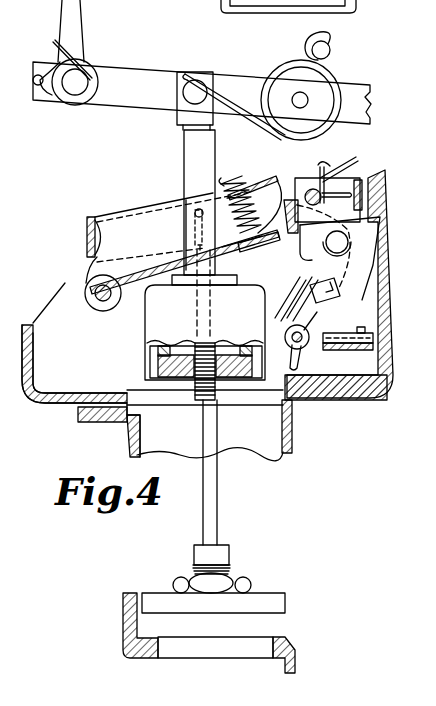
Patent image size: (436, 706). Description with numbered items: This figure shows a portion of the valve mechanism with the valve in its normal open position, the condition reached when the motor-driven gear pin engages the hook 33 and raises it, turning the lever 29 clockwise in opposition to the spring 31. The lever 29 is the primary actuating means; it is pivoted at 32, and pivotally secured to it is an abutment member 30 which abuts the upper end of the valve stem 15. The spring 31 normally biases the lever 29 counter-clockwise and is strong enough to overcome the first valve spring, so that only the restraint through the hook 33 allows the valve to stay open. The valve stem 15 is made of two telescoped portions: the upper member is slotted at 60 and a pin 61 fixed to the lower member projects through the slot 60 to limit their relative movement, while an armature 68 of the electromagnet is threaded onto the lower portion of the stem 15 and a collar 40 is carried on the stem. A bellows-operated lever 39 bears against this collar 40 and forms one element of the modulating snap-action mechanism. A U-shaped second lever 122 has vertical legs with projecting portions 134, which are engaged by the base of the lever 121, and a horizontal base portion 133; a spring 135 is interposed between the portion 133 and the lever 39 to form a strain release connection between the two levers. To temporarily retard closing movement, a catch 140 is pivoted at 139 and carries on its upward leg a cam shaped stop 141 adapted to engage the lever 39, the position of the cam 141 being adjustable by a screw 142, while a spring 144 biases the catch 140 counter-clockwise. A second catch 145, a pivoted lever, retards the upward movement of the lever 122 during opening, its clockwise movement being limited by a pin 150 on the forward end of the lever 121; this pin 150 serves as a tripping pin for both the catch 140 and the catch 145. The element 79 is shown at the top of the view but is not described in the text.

The valve stem 15 is at (240, 514).
The lever 29 is at (118, 67).
The abutment member 30 is at (177, 113).
The spring 31 is at (283, 65).
The pivot 32 is at (305, 93).
The hook 33 is at (62, 22).
The lever 39 is at (268, 244).
The collar 40 is at (228, 277).
The slot 60 is at (196, 240).
The pin 61 is at (195, 219).
The armature 68 is at (150, 378).
The bracket 79 is at (283, 14).
The lever 121 is at (88, 235).
The second lever 122 is at (152, 192).
The base portion 133 is at (258, 190).
The projecting portions 134 is at (104, 220).
The spring 135 is at (228, 180).
The pivot 139 is at (289, 332).
The catch 140 is at (322, 320).
The cam shaped stop 141 is at (288, 296).
The screw 142 is at (333, 297).
The spring 144 is at (298, 368).
The second catch 145 is at (360, 233).
The pin 150 is at (347, 248).